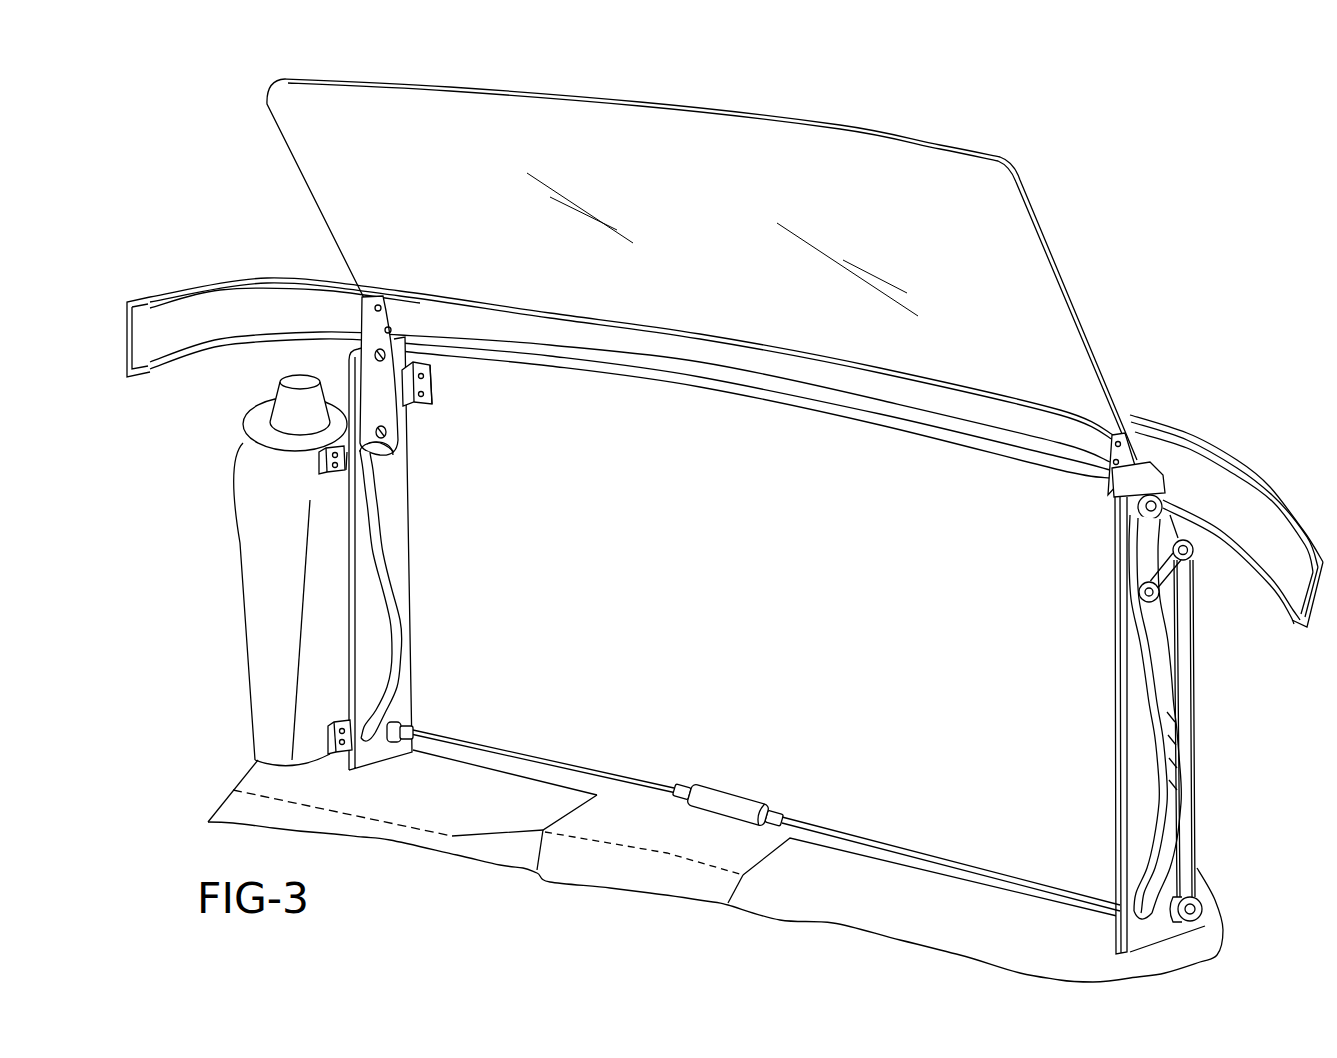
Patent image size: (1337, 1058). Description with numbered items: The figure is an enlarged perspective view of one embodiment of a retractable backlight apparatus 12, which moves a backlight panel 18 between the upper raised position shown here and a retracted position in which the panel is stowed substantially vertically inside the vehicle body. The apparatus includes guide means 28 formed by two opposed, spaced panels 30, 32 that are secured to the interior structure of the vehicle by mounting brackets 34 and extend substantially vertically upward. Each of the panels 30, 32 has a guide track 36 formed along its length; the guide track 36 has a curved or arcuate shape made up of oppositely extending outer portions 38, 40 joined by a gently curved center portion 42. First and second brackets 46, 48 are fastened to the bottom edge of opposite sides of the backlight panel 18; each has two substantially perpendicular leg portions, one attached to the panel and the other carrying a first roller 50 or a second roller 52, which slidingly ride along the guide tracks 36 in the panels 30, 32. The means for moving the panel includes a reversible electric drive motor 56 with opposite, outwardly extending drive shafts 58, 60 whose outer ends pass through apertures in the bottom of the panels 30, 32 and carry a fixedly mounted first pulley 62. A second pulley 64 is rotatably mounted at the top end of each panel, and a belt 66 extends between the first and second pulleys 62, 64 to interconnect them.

The retractable backlight apparatus 12 is at (1153, 263).
The backlight panel 18 is at (1013, 189).
The guide means 28 is at (738, 645).
The panel 30 is at (410, 635).
The panel 32 is at (1127, 817).
The mounting brackets 34 is at (432, 390).
The guide track 36 is at (473, 574).
The outer portion 38 is at (365, 458).
The outer portion 40 is at (384, 702).
The center portion 42 is at (377, 556).
The first bracket 46 is at (1124, 470).
The second bracket 48 is at (340, 362).
The first roller 50 is at (362, 320).
The second roller 52 is at (368, 450).
The reversible electric drive motor 56 is at (728, 796).
The drive shaft 58 is at (873, 838).
The drive shaft 60 is at (490, 757).
The first pulley 62 is at (1202, 910).
The second pulley 64 is at (1193, 558).
The belt 66 is at (1252, 785).